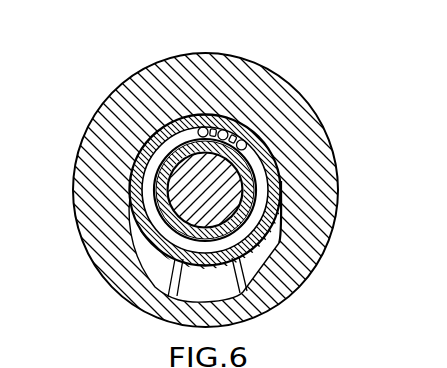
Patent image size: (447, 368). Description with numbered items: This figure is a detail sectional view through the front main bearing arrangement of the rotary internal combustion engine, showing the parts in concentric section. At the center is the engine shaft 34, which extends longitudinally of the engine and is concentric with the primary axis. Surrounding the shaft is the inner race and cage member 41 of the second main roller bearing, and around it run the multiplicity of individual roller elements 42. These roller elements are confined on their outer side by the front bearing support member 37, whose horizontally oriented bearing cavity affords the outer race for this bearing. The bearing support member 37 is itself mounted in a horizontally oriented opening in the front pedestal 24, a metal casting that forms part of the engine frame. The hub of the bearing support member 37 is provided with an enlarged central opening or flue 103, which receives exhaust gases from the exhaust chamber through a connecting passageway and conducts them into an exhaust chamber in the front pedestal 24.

The front pedestal 24 is at (272, 303).
The flue 103 is at (268, 258).
The front bearing support member 37 is at (281, 181).
The inner race and cage member 41 is at (252, 165).
The roller elements 42 is at (236, 130).
The engine shaft 34 is at (178, 188).